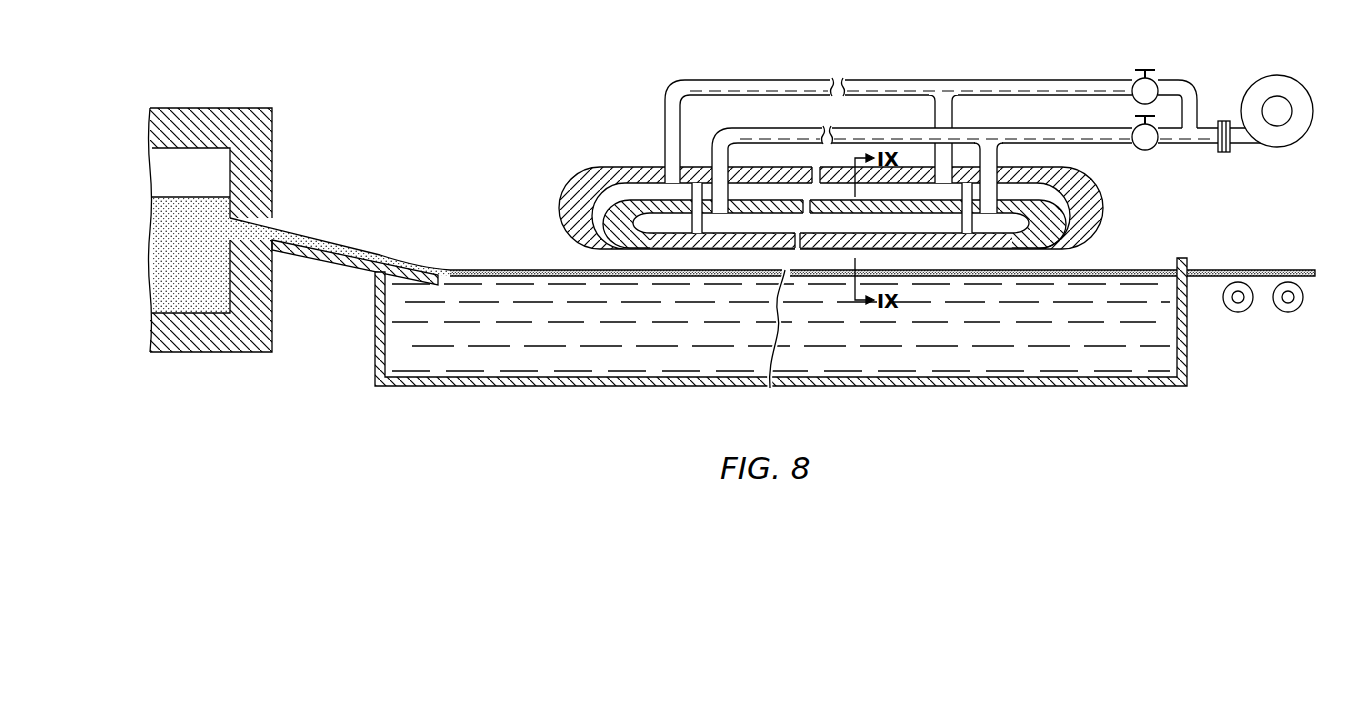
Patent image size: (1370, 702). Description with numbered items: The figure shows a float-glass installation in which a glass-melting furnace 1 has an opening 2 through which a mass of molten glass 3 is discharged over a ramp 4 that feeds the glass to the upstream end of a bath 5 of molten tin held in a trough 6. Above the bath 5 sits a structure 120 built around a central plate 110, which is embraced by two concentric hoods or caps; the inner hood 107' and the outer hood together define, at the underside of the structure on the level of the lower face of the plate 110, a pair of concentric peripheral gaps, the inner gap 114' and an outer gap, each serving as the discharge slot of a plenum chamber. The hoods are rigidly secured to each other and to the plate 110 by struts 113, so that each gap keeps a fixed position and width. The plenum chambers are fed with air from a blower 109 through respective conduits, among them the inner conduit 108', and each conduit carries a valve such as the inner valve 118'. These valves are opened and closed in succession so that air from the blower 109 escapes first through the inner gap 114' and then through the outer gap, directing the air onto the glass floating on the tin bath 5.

The glass-melting furnace 1 is at (195, 108).
The opening 2 is at (252, 224).
The mass of molten glass 3 is at (347, 250).
The ramp 4 is at (330, 264).
The bath of molten tin 5 is at (618, 360).
The trough 6 is at (768, 388).
The inner hood 107' is at (834, 185).
The inner conduit 108' is at (997, 158).
The blower 109 is at (1305, 118).
The central plate 110 is at (783, 247).
The struts 113 is at (702, 236).
The inner peripheral gap 114' is at (661, 261).
The inner valve 118' is at (1157, 153).
The structure 120 is at (924, 151).